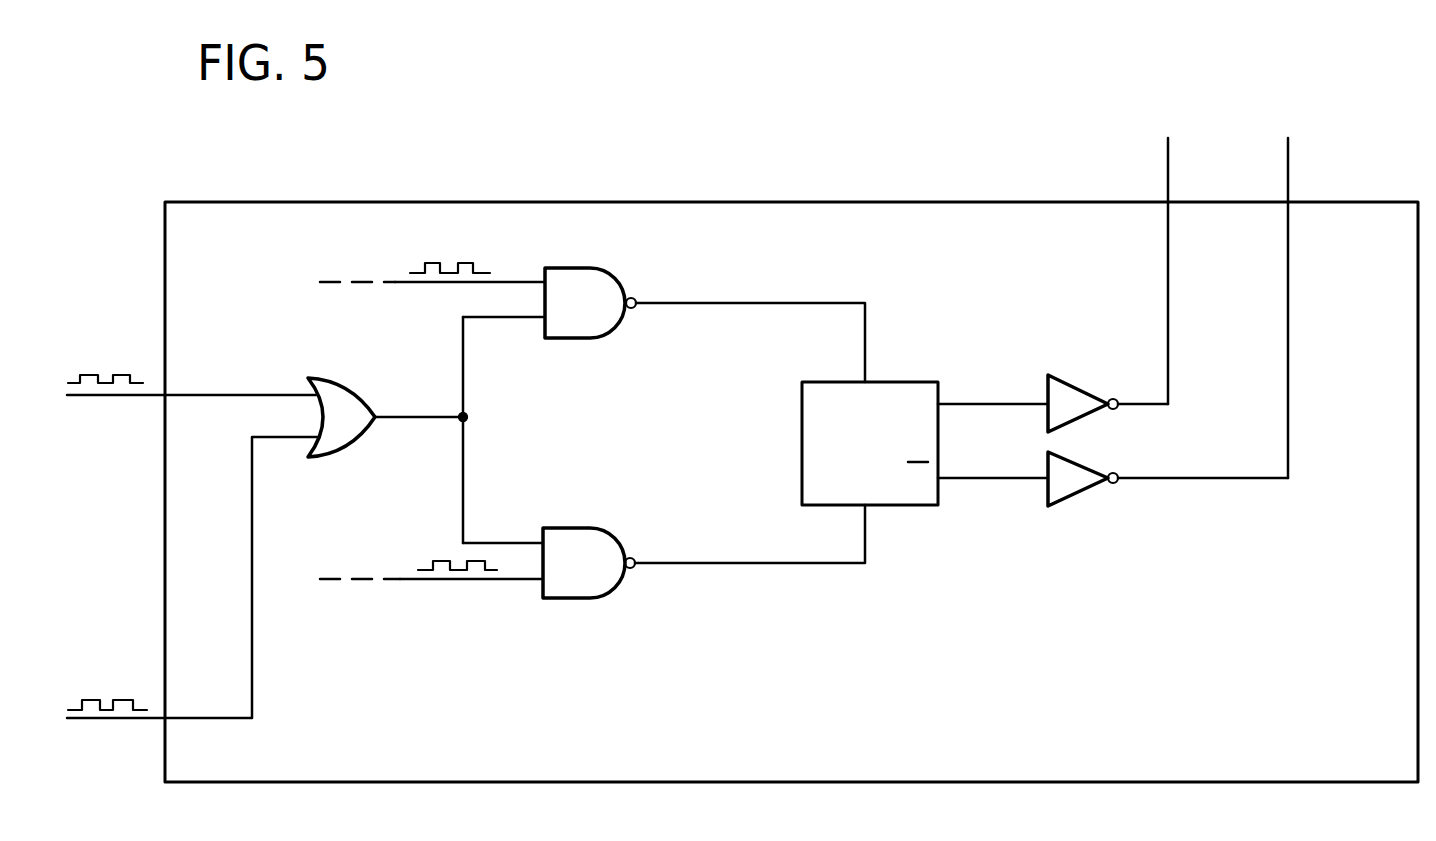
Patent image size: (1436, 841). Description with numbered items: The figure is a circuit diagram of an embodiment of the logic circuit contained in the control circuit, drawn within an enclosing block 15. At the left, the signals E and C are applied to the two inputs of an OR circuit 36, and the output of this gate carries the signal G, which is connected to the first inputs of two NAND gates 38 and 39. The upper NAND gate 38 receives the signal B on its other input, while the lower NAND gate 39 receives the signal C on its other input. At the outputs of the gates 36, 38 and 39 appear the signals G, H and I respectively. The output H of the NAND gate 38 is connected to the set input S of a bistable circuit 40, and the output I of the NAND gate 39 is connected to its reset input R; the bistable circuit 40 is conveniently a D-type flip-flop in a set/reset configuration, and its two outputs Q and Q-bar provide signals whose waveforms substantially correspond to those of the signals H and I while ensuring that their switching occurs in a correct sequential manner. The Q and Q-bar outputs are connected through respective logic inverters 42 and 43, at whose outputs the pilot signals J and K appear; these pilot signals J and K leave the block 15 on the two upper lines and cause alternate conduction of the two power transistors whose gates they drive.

The timing/control circuit enclosure 15 is at (762, 231).
The OR circuit 36 is at (335, 398).
The NAND gate 38 is at (592, 285).
The NAND gate 39 is at (598, 585).
The bistable circuit 40 is at (815, 442).
The logic inverter 42 is at (1050, 395).
The logic inverter 43 is at (1060, 490).
The signal E is at (100, 383).
The signal C is at (101, 710).
The signal B is at (443, 273).
The signal G is at (405, 417).
The signal H is at (752, 302).
The signal I is at (742, 563).
The pilot signal J is at (1137, 404).
The pilot signal K is at (1235, 478).